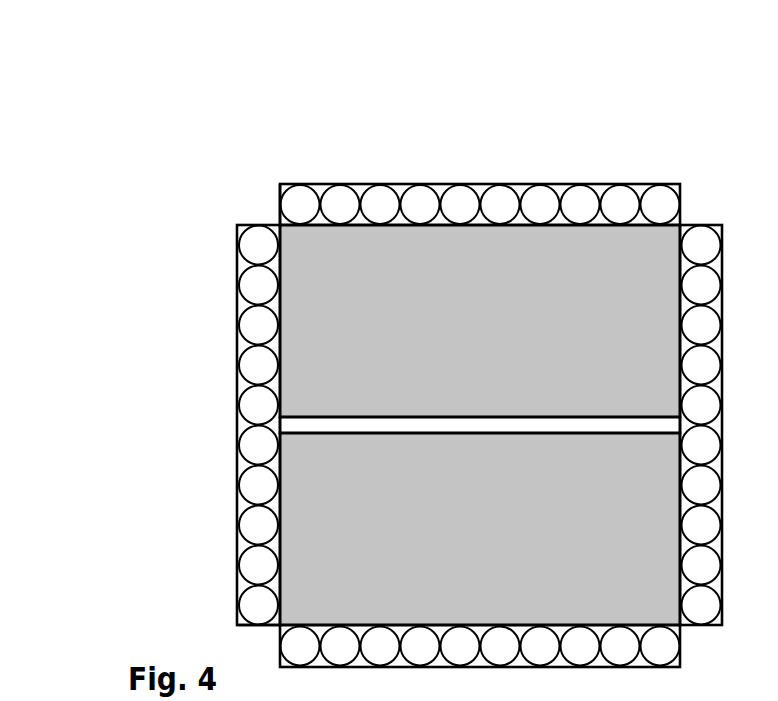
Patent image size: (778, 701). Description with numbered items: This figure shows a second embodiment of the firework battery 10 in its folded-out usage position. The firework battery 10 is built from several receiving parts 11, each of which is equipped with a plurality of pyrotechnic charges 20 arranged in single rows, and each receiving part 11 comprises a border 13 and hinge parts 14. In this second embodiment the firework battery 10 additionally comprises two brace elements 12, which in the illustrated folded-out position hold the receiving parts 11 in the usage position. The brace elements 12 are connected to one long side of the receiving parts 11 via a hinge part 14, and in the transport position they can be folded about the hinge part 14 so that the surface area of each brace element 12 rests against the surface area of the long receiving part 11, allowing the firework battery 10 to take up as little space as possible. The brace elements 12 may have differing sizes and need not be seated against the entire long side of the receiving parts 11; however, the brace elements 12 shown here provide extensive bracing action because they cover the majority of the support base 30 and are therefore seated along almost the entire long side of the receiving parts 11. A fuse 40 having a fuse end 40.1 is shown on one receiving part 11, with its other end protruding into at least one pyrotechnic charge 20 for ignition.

The firework battery 10 is at (233, 112).
The receiving part 11 is at (403, 185).
The brace element 12 is at (486, 342).
The border 13 is at (237, 468).
The hinge part 14 is at (280, 223).
The pyrotechnic charge 20 is at (342, 195).
The support base 30 is at (302, 430).
The fuse 40 is at (232, 603).
The fuse end 40.1 is at (169, 589).